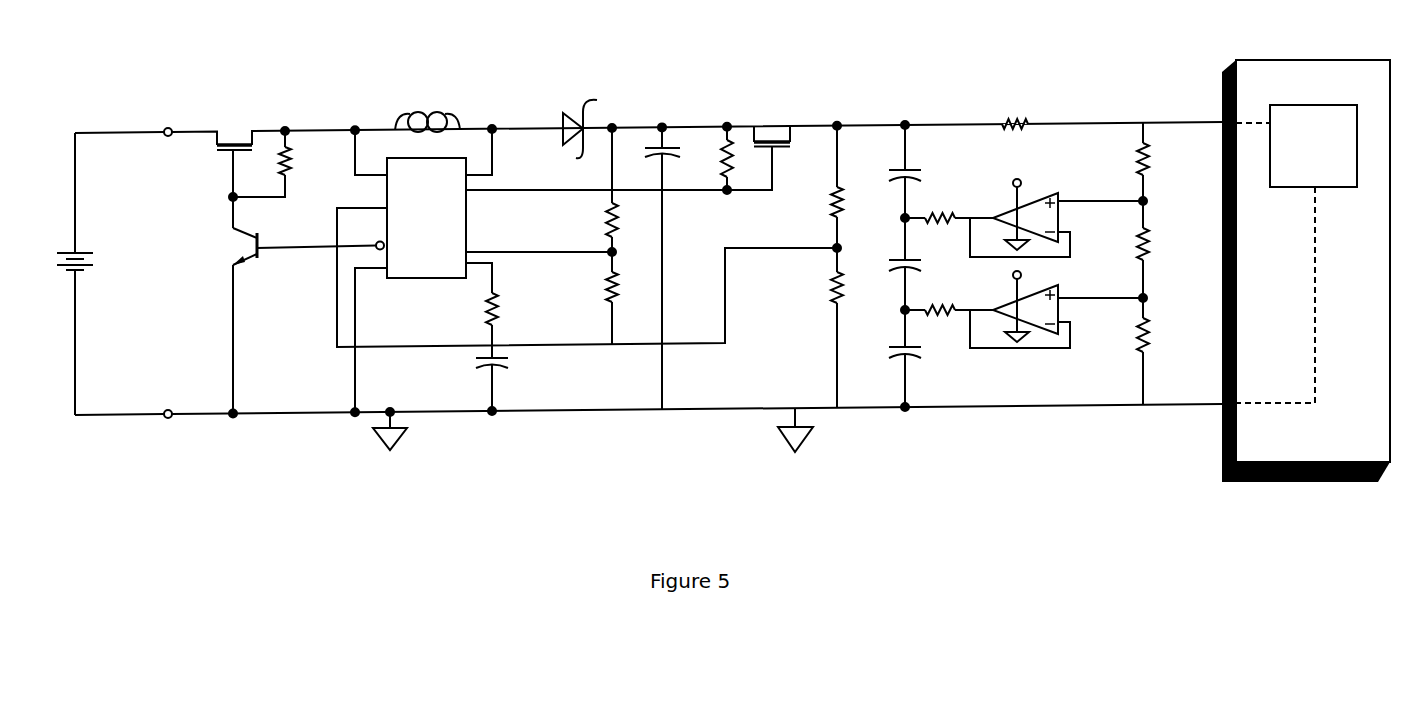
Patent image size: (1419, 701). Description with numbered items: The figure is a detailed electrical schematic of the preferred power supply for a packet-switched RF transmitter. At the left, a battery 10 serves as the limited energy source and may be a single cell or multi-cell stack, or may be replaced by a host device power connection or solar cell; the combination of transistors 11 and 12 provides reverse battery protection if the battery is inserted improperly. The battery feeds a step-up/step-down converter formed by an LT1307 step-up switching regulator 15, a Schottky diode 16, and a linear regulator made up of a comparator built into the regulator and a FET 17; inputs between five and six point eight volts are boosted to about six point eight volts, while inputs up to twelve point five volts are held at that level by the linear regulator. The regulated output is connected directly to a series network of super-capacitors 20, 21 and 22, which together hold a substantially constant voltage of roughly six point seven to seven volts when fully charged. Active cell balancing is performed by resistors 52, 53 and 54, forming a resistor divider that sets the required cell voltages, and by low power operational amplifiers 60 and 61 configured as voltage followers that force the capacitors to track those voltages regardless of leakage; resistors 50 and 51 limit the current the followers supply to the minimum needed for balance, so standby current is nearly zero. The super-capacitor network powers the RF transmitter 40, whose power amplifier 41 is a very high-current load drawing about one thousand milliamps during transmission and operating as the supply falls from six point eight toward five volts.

The battery 10 is at (80, 277).
The transistor 11 is at (226, 156).
The transistor 12 is at (245, 267).
The step-up switching regulator 15 is at (398, 280).
The Schottky diode 16 is at (560, 125).
The FET 17 is at (758, 135).
The super-capacitor 20 is at (902, 179).
The super-capacitor 21 is at (897, 270).
The super-capacitor 22 is at (897, 357).
The RF transmitter 40 is at (1306, 249).
The power amplifier 41 is at (1323, 188).
The resistor 50 is at (936, 211).
The resistor 51 is at (936, 303).
The resistor 52 is at (1155, 157).
The resistor 53 is at (1155, 242).
The resistor 54 is at (1155, 332).
The operational amplifier 60 is at (1064, 194).
The operational amplifier 61 is at (1064, 288).